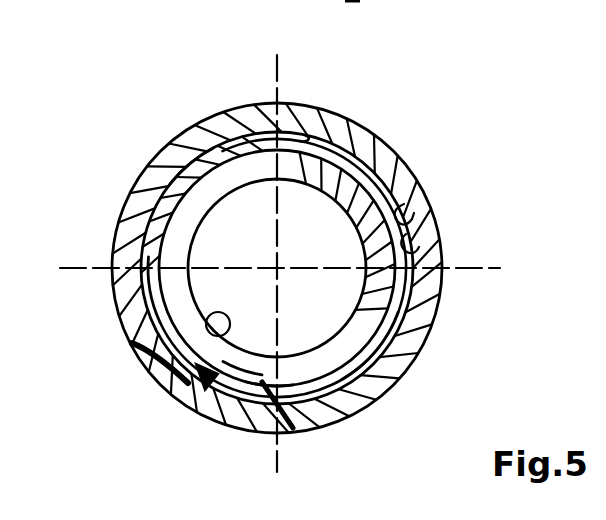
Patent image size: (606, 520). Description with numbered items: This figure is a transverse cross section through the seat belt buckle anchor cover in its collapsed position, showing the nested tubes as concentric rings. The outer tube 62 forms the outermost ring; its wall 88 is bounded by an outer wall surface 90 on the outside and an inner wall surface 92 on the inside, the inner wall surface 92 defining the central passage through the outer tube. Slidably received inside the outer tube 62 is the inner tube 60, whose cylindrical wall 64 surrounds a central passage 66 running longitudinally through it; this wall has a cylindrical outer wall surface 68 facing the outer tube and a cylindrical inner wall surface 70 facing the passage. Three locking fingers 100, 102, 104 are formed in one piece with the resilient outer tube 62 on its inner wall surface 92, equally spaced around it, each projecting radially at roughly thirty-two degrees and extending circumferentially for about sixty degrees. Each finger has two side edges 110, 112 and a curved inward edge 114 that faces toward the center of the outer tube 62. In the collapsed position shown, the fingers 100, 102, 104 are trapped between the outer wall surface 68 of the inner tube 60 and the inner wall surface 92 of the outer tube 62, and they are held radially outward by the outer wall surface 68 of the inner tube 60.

The outer tube 62 is at (438, 364).
The wall 88 is at (432, 318).
The outer wall surface 90 is at (440, 264).
The inner wall surface 92 is at (405, 217).
The locking finger 100 is at (358, 372).
The locking finger 102 is at (158, 290).
The locking finger 104 is at (347, 162).
The side edge 110 is at (240, 130).
The side edge 112 is at (400, 240).
The curved inward edge 114 is at (233, 167).
The inner tube 60 is at (236, 358).
The cylindrical wall 64 is at (250, 374).
The central passage 66 is at (297, 332).
The cylindrical outer wall surface 68 is at (262, 368).
The cylindrical inner wall surface 70 is at (182, 347).